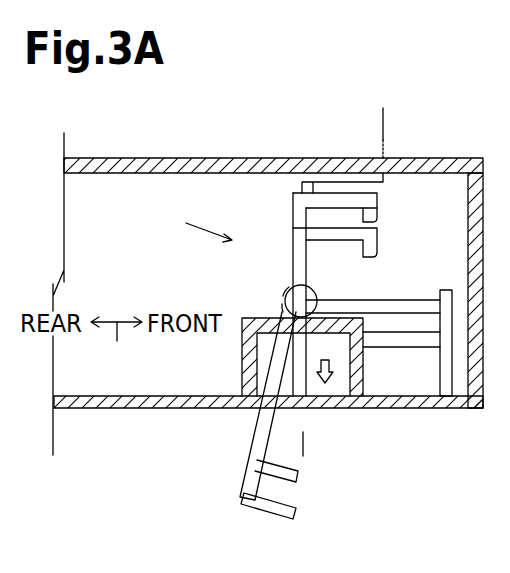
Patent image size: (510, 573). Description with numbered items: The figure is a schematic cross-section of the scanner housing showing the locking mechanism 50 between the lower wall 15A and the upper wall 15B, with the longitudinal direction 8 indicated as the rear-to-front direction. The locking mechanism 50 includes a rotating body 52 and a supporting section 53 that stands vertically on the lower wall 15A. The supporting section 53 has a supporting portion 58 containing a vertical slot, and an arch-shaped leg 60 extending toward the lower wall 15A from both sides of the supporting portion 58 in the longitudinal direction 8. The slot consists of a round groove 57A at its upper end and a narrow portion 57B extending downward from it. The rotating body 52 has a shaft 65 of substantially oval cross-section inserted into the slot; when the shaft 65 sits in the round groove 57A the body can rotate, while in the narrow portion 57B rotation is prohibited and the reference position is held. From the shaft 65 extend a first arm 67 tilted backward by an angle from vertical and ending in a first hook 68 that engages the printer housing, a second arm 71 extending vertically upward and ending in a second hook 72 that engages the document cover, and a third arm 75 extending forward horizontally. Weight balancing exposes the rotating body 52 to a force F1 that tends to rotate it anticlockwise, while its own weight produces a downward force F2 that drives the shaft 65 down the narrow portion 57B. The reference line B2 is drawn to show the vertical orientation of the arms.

The lower wall 15A is at (110, 410).
The upper wall 15B is at (92, 158).
The longitudinal direction 8 is at (118, 345).
The locking mechanism 50 is at (195, 227).
The rotating body 52 is at (349, 289).
The supporting section 53 is at (285, 285).
The round groove 57A is at (283, 296).
The narrow portion 57B is at (283, 312).
The supporting portion 58 is at (312, 297).
The arch-shaped leg 60 is at (242, 362).
The shaft 65 is at (290, 280).
The first arm 67 is at (240, 453).
The first hook 68 is at (299, 480).
The second arm 71 is at (308, 180).
The second hook 72 is at (379, 213).
The third arm 75 is at (397, 298).
The reference axis B2 is at (393, 126).
The force F1 is at (302, 413).
The downward force F2 is at (340, 380).